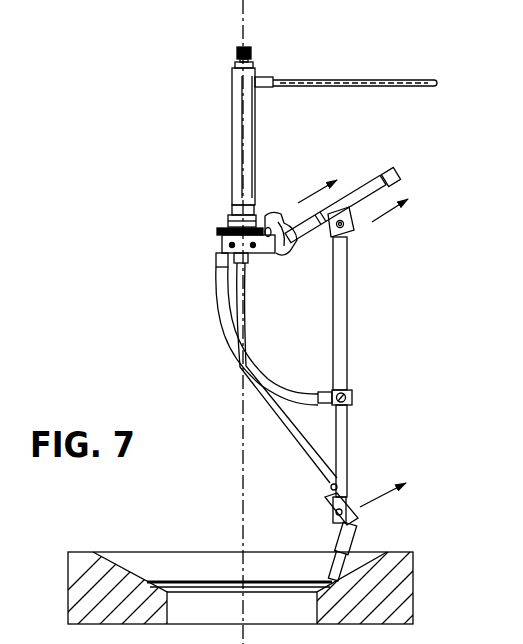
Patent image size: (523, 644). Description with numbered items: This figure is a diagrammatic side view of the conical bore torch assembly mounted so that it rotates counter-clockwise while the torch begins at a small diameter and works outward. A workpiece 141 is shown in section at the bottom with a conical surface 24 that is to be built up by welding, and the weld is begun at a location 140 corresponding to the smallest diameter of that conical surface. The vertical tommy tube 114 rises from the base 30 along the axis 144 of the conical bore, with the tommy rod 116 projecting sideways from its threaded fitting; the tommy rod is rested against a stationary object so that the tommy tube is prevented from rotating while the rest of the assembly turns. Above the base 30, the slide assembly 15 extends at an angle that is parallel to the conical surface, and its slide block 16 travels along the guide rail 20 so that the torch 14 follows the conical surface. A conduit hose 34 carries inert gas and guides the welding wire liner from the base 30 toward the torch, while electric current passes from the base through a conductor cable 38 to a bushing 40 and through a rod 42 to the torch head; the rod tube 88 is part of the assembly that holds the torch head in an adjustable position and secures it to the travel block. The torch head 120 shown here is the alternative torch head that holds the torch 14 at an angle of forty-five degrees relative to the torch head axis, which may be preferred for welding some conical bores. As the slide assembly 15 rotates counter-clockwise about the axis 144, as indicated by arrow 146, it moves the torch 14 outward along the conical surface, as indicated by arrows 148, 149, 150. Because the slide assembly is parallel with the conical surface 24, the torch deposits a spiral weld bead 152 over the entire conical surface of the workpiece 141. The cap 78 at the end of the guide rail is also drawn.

The torch 14 is at (342, 541).
The slide assembly 15 is at (328, 166).
The slide block 16 is at (350, 190).
The guide rail 20 is at (370, 193).
The conical surface 24 is at (123, 562).
The base 30 is at (204, 229).
The conduit hose 34 is at (285, 388).
The conductor cable 38 is at (302, 450).
The bushing 40 is at (353, 395).
The rod 42 is at (347, 438).
The end cap 78 is at (388, 176).
The rod tube 88 is at (348, 298).
The tommy tube 114 is at (256, 124).
The tommy rod 116 is at (380, 80).
The torch head 120 is at (353, 508).
The weld starting location 140 is at (313, 593).
The workpiece 141 is at (402, 573).
The axis 144 is at (240, 446).
The arrow 146 is at (224, 9).
The arrow 148 is at (295, 200).
The arrow 149 is at (366, 225).
The arrow 150 is at (386, 491).
The spiral weld bead 152 is at (146, 582).